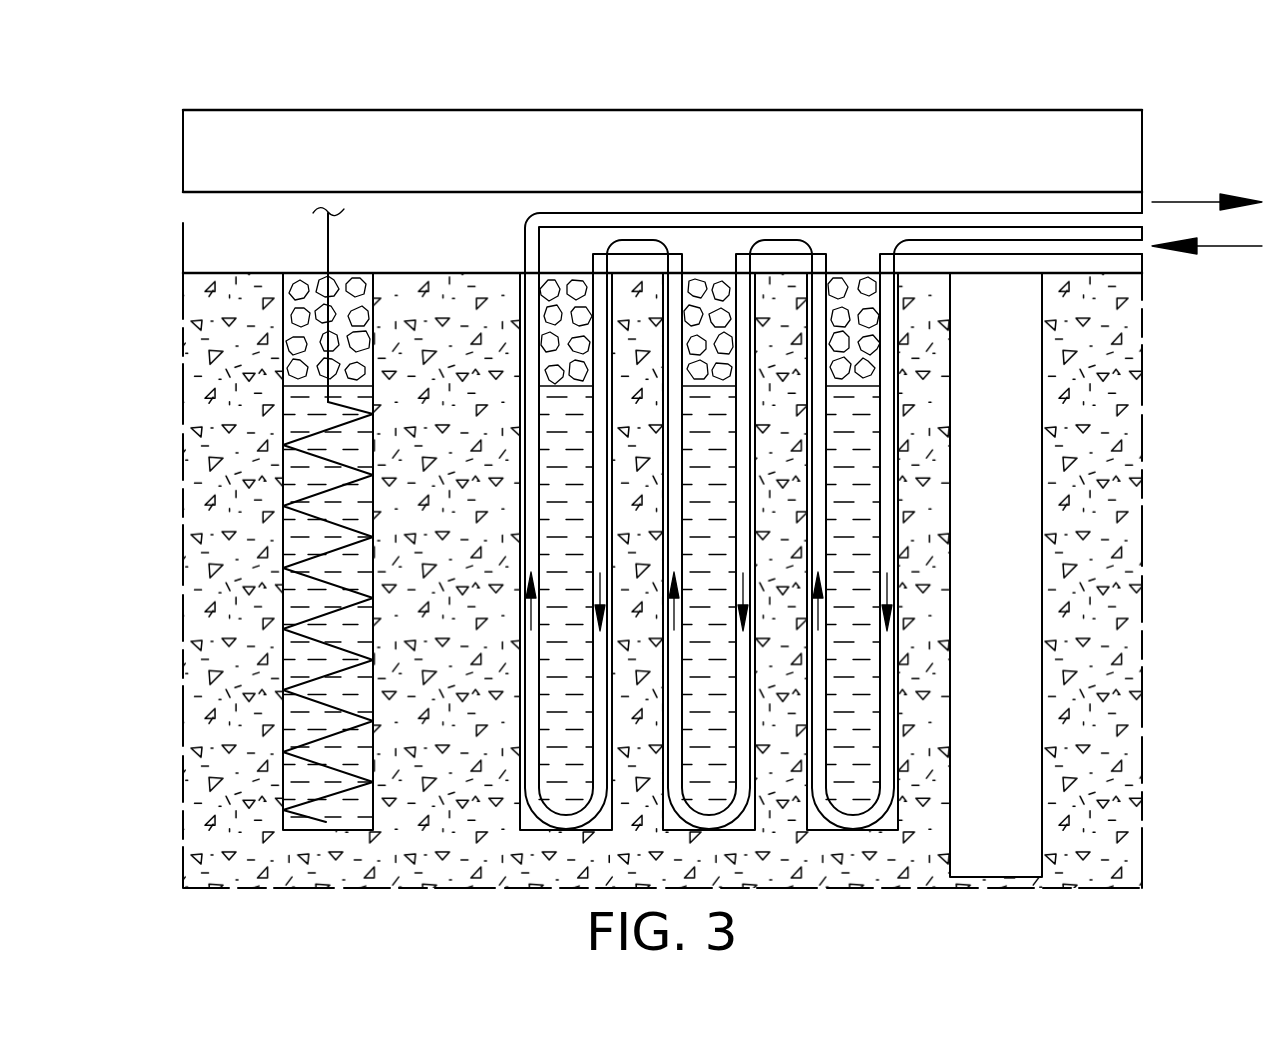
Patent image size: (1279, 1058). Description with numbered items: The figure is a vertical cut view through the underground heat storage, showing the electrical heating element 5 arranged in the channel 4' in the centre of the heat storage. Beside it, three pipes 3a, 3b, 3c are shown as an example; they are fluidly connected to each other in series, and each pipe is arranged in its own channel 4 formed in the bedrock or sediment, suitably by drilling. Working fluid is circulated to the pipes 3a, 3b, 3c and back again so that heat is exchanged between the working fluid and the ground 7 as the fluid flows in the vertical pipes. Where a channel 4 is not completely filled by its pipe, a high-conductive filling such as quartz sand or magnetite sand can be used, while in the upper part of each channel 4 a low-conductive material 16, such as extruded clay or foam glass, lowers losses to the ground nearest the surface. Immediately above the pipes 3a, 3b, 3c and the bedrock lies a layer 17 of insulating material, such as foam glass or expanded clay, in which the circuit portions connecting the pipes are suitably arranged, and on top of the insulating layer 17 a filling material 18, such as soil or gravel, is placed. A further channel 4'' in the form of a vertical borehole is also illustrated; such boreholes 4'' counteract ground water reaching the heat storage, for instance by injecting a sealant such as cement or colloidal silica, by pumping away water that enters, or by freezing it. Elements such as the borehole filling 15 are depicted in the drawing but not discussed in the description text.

The pipe 3a is at (888, 493).
The pipe 3b is at (745, 527).
The pipe 3c is at (592, 683).
The channel 4 is at (867, 551).
The channel 4' is at (240, 551).
The further channel 4'' is at (1090, 575).
The electrical heating element 5 is at (318, 469).
The ground 7 is at (1088, 357).
The borehole filling 15 is at (852, 445).
The low-conductive material 16 is at (850, 295).
The insulating layer 17 is at (437, 235).
The filling material 18 is at (598, 160).